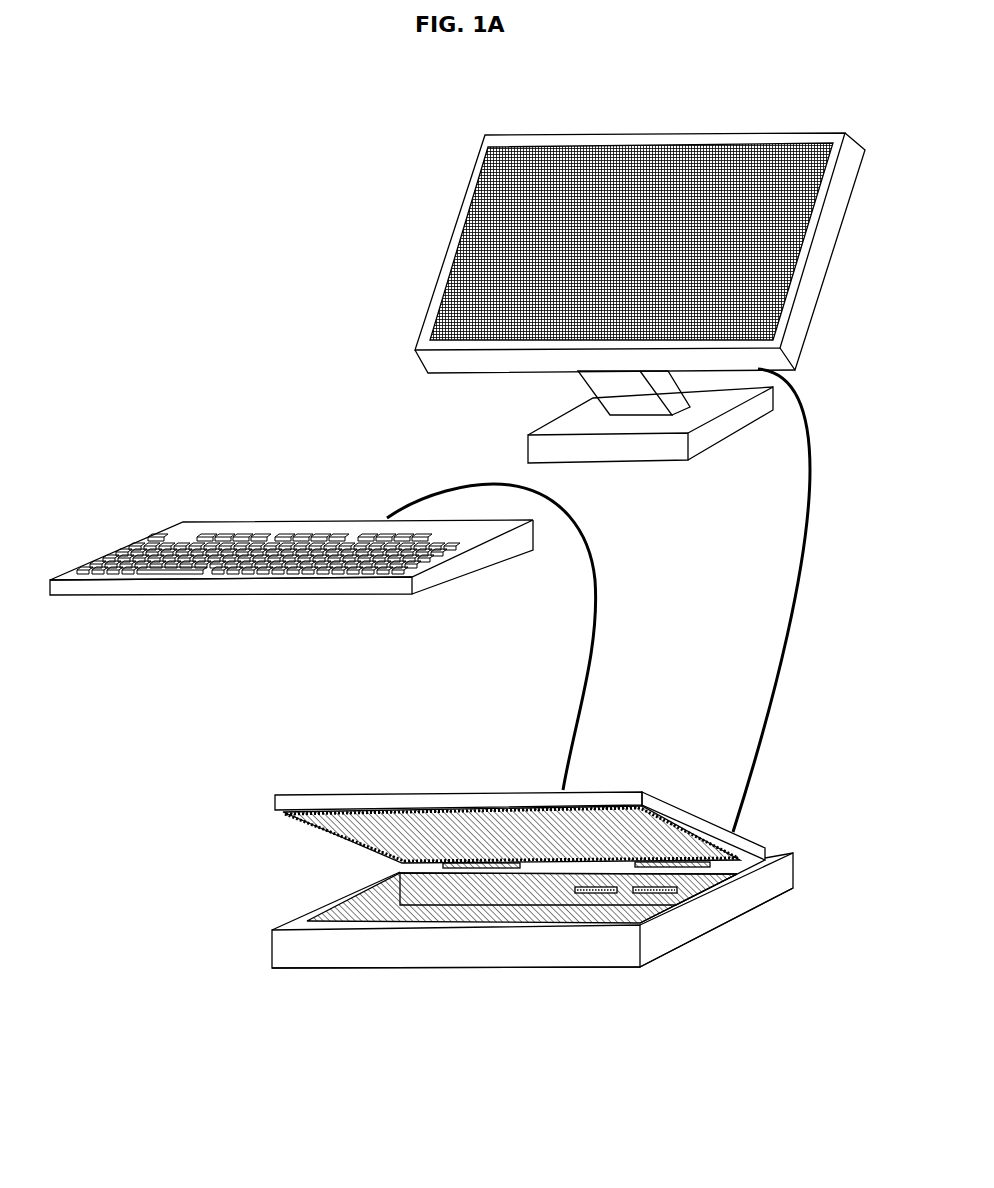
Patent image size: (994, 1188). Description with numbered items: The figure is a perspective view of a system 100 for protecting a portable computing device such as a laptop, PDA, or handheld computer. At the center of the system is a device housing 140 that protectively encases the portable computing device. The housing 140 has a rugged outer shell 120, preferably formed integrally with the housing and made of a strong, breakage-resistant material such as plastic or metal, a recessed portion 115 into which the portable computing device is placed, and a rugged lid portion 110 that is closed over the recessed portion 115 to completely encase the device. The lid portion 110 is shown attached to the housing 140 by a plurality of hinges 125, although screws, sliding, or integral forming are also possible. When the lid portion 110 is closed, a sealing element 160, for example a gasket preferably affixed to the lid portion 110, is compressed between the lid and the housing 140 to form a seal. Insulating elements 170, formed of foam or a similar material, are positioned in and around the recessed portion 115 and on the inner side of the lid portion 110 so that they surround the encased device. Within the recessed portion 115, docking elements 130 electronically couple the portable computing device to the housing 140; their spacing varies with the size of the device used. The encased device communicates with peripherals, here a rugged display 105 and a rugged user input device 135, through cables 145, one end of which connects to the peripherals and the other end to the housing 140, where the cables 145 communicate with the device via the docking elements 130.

The system 100 is at (298, 200).
The rugged display 105 is at (500, 193).
The lid portion 110 is at (518, 807).
The recessed portion 115 is at (305, 915).
The outer shell 120 is at (523, 933).
The hinges 125 is at (722, 860).
The docking elements 130 is at (640, 923).
The rugged user input device 135 is at (183, 523).
The device housing 140 is at (497, 968).
The cables 145 is at (750, 612).
The sealing element 160 is at (283, 813).
The insulating elements 170 is at (388, 837).